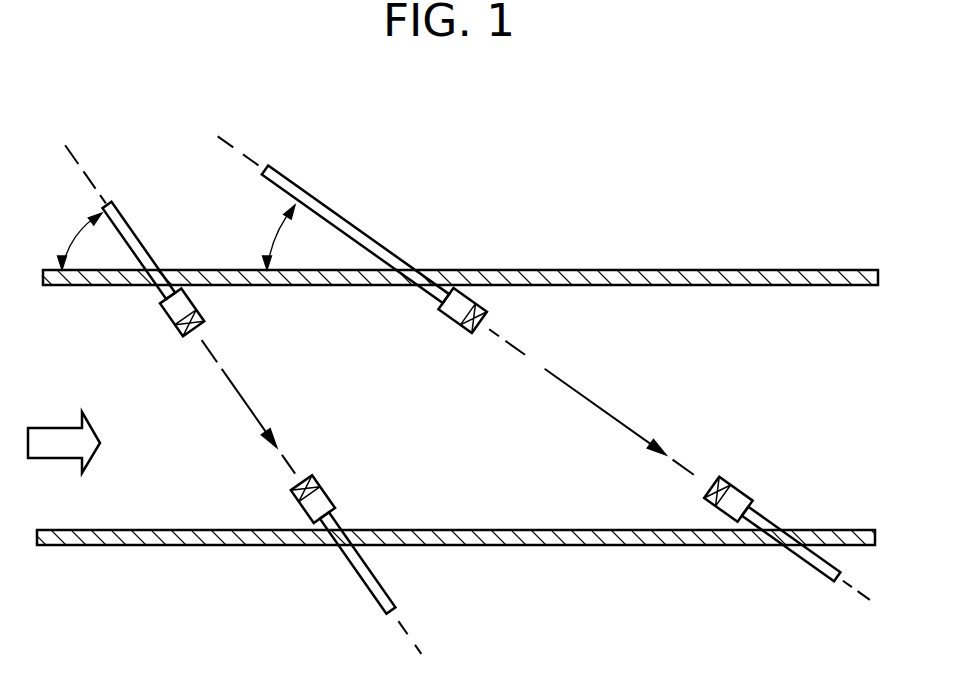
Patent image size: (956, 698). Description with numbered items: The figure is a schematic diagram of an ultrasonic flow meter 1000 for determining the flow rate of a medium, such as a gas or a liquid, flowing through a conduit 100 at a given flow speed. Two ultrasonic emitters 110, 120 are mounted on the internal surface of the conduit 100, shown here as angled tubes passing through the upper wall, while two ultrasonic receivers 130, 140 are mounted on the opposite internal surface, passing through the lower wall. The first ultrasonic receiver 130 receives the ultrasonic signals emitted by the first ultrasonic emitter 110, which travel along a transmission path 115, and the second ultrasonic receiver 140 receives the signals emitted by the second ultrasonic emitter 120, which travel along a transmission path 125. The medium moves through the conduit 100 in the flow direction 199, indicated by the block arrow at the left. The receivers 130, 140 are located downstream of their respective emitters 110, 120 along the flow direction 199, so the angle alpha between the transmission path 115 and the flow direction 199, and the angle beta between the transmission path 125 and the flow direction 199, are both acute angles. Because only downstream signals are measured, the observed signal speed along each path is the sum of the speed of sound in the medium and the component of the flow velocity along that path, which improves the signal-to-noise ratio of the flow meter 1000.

The ultrasonic flow meter 1000 is at (661, 162).
The conduit 100 is at (784, 258).
The first ultrasonic emitter 110 is at (163, 311).
The transmission path 115 is at (243, 397).
The second ultrasonic emitter 120 is at (453, 316).
The transmission path 125 is at (597, 408).
The first ultrasonic receiver 130 is at (337, 497).
The second ultrasonic receiver 140 is at (747, 490).
The flow direction 199 is at (53, 428).